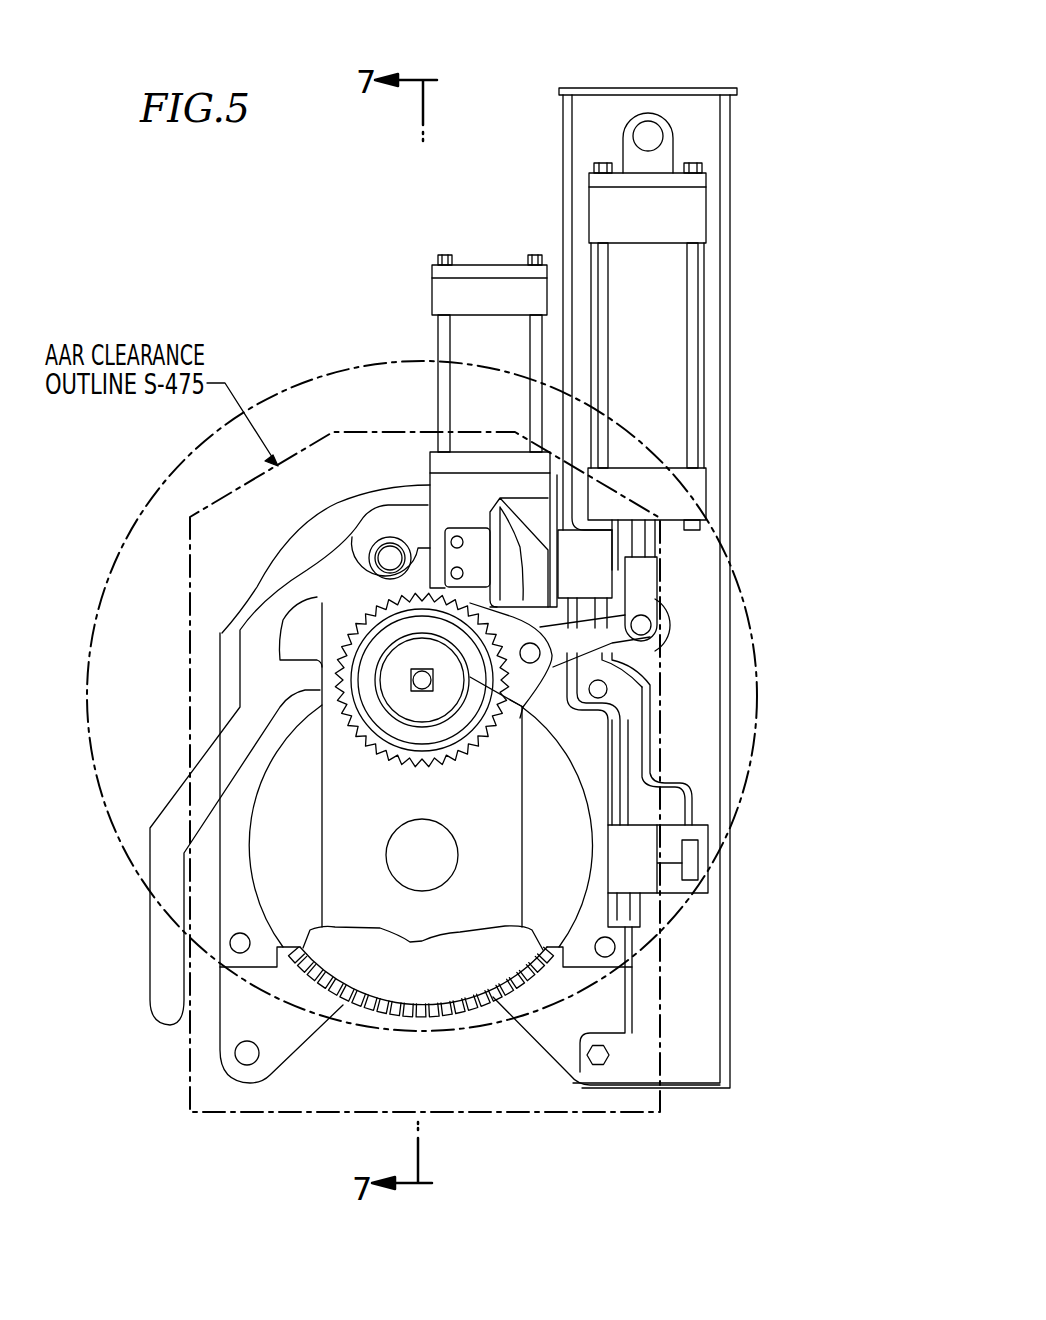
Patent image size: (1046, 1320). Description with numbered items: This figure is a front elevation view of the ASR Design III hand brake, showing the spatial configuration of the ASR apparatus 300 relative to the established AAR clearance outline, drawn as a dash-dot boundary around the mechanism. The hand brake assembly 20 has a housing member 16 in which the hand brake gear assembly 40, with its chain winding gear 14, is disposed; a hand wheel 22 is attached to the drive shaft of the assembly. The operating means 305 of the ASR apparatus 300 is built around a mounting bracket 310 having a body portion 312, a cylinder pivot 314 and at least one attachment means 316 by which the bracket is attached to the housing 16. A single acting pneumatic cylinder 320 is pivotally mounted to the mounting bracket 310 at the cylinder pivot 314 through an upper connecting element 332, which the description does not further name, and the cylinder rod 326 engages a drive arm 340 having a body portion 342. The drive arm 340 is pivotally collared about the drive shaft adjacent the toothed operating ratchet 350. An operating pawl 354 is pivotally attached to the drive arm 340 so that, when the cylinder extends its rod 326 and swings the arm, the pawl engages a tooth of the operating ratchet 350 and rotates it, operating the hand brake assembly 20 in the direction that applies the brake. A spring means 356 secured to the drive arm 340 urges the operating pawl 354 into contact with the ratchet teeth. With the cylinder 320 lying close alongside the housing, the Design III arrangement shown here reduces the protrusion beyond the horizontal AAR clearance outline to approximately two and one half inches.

The chain winding gear 14 is at (365, 1006).
The housing member 16 is at (277, 1067).
The hand brake assembly 20 is at (243, 282).
The hand wheel 22 is at (150, 498).
The hand brake gear assembly 40 is at (485, 1082).
The ASR apparatus 300 is at (687, 66).
The operating means 305 is at (513, 75).
The mounting bracket 310 is at (768, 101).
The body portion 312 is at (732, 158).
The cylinder pivot 314 is at (646, 115).
The attachment means 316 is at (600, 1066).
The single acting pneumatic cylinder 320 is at (665, 322).
The rod 326 is at (653, 575).
The clevis 332 is at (623, 132).
The drive arm 340 is at (700, 617).
The body portion 342 is at (620, 643).
The operating ratchet 350 is at (410, 762).
The operating pawl 354 is at (516, 712).
The spring means 356 is at (521, 697).